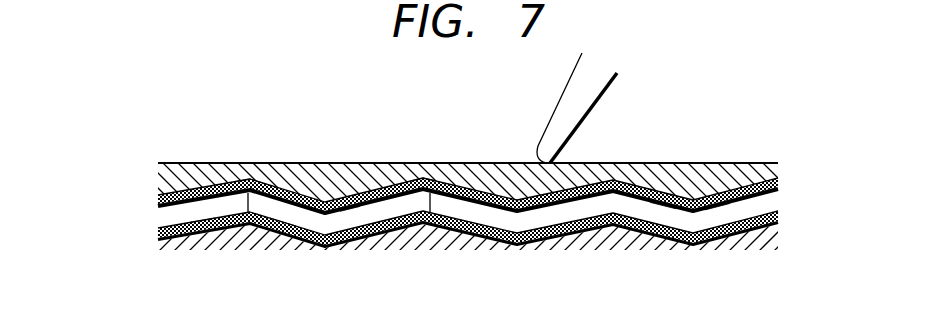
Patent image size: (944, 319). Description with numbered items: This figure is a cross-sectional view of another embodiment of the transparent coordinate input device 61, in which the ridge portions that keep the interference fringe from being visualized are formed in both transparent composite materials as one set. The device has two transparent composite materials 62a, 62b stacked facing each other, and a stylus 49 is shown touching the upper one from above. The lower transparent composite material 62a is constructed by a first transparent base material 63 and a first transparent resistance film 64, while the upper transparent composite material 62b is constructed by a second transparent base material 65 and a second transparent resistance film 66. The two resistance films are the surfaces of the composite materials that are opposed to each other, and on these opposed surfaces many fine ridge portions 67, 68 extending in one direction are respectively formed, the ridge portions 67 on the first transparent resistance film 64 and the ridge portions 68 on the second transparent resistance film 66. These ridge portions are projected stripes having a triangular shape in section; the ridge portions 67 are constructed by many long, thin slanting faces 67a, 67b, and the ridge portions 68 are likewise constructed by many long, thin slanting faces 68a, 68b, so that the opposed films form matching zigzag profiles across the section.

The stylus pen 49 is at (574, 120).
The transparent coordinate input device 61 is at (725, 120).
The transparent composite material 62a is at (142, 245).
The transparent composite material 62b is at (140, 188).
The first transparent base material 63 is at (778, 236).
The first transparent resistance film 64 is at (778, 217).
The second transparent base material 65 is at (757, 163).
The second transparent resistance film 66 is at (778, 182).
The ridge portion 67 is at (253, 180).
The slanting face 67a is at (202, 220).
The slanting face 67b is at (283, 222).
The ridge portion 68 is at (353, 208).
The slanting face 68a is at (663, 206).
The slanting face 68b is at (718, 206).